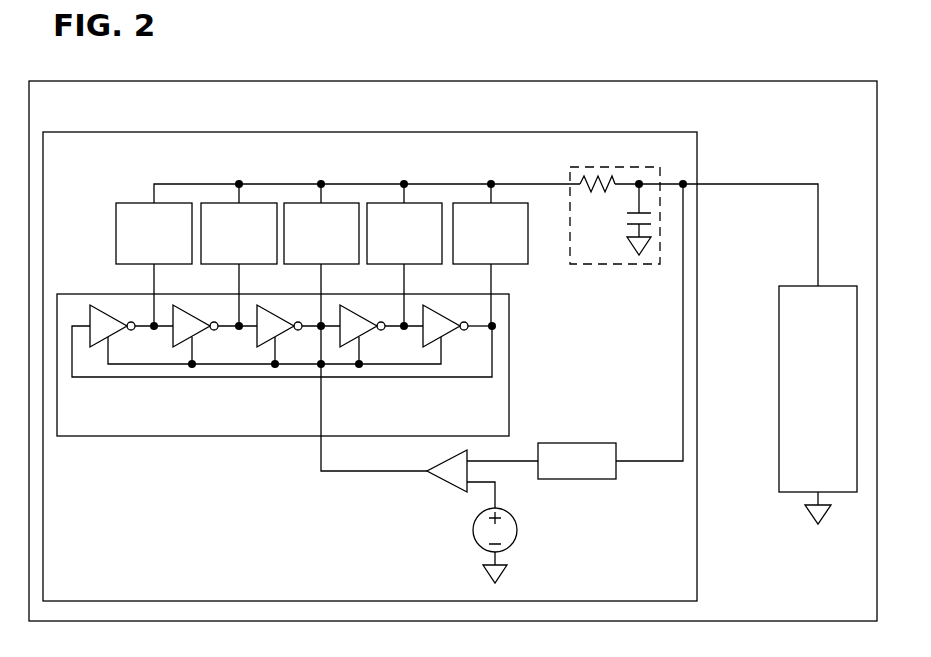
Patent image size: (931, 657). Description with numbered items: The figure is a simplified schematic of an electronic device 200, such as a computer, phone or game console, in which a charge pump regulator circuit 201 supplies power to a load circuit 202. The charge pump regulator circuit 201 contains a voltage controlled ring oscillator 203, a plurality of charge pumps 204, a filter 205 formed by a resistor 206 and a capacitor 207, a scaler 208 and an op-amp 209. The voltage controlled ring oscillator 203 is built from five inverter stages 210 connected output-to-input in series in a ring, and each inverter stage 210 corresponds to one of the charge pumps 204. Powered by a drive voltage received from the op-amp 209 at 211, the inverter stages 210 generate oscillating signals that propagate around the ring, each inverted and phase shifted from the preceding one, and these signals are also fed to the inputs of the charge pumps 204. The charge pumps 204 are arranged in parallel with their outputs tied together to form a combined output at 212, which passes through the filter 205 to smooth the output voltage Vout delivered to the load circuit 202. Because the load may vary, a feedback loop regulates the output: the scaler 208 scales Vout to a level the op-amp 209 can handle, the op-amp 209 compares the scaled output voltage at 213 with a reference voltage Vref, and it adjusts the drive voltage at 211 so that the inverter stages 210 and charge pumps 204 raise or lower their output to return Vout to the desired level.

The electronic device 200 is at (380, 78).
The charge pump regulator circuit 201 is at (456, 128).
The load circuit 202 is at (780, 302).
The voltage controlled ring oscillator 203 is at (283, 386).
The charge pumps 204 is at (340, 203).
The filter 205 is at (621, 200).
The resistor 206 is at (594, 182).
The capacitor 207 is at (630, 226).
The scaler 208 is at (598, 479).
The op-amp 209 is at (445, 483).
The inverter stages 210 is at (173, 315).
The drive voltage 211 is at (321, 452).
The combined output 212 is at (538, 184).
The scaled output voltage 213 is at (523, 461).